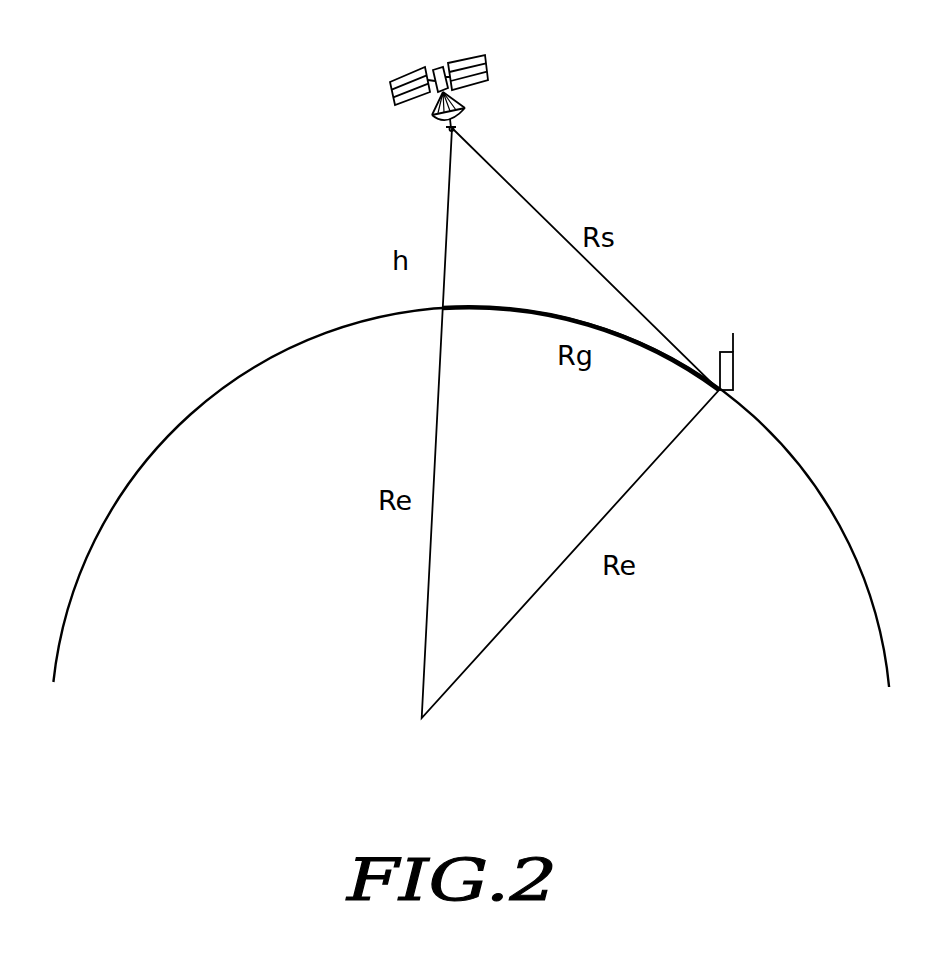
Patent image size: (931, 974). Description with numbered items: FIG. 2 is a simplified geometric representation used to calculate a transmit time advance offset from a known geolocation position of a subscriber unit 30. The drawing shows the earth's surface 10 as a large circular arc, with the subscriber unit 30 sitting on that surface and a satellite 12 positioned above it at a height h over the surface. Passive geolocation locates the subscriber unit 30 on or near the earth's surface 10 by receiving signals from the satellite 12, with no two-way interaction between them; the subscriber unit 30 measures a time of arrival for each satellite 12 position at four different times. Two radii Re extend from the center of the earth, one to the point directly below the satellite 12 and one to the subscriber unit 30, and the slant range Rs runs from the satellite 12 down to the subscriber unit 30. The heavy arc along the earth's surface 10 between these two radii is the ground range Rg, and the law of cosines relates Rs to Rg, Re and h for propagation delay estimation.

The earth's surface 10 is at (277, 352).
The satellite 12 is at (477, 52).
The subscriber unit 30 is at (735, 370).